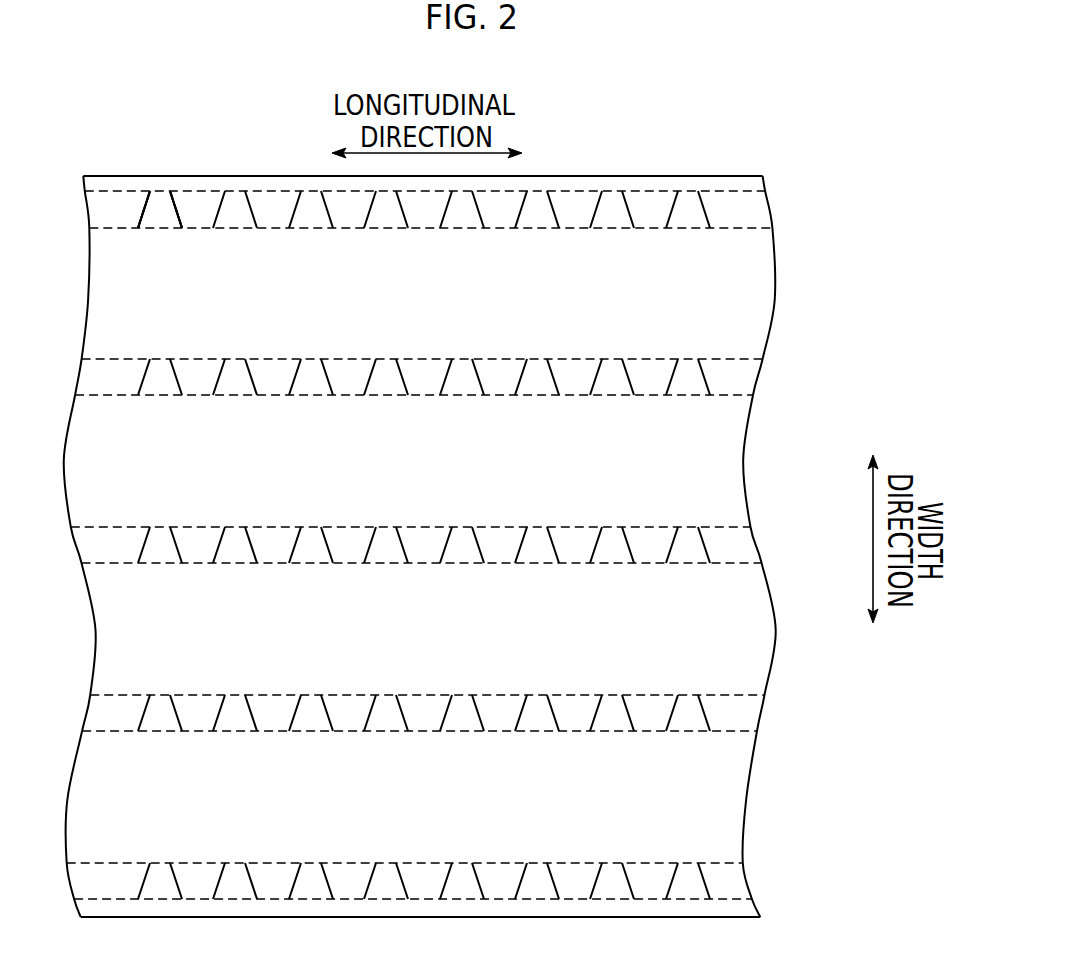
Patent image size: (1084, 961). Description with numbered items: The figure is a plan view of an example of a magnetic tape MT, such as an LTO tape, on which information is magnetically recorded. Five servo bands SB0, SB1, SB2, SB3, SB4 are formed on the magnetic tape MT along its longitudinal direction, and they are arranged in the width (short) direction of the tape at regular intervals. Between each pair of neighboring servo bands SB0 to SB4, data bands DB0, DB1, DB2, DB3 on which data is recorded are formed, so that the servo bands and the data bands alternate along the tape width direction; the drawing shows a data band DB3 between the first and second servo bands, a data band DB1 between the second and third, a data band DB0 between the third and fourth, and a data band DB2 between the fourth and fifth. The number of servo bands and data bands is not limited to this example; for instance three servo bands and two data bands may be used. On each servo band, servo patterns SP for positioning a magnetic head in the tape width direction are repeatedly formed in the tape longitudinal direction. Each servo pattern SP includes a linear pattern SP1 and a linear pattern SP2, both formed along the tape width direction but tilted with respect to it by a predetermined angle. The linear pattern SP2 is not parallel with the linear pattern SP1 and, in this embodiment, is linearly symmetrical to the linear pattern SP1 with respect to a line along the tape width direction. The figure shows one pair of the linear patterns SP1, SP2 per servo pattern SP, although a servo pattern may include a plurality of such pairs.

The magnetic tape MT is at (687, 175).
The servo band SB0 is at (760, 210).
The servo band SB1 is at (742, 380).
The servo band SB2 is at (745, 545).
The servo band SB3 is at (750, 715).
The servo band SB4 is at (740, 883).
The data band DB0 is at (763, 630).
The data band DB1 is at (733, 465).
The data band DB2 is at (735, 803).
The data band DB3 is at (760, 297).
The servo pattern SP is at (248, 287).
The linear pattern SP1 is at (148, 217).
The linear pattern SP2 is at (182, 218).